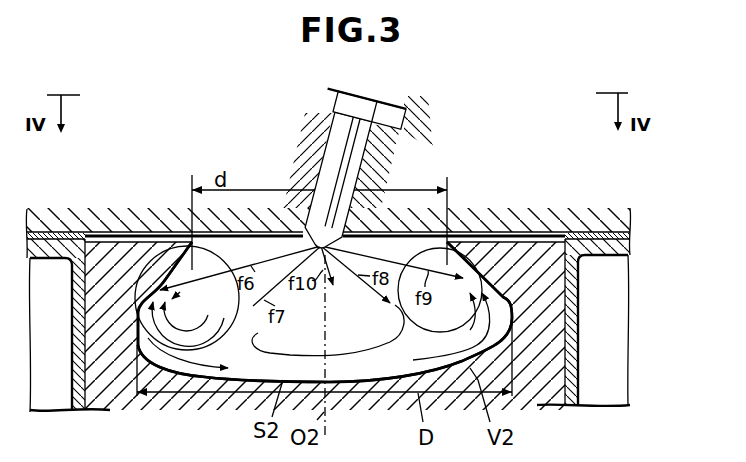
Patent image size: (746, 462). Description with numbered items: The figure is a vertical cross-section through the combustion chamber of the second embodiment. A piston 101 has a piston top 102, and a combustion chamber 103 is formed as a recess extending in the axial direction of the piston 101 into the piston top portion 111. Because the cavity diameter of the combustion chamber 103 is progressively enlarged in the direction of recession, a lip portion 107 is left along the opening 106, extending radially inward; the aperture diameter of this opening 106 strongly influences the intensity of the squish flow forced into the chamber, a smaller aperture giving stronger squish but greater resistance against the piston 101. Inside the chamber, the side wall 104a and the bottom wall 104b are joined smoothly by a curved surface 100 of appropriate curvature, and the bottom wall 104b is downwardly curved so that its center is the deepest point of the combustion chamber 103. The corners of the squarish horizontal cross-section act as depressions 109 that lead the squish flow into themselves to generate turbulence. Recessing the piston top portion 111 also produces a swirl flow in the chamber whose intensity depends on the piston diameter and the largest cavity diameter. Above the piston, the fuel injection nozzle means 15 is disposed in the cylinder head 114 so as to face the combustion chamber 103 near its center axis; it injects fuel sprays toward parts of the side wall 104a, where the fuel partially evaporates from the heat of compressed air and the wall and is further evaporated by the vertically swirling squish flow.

The fuel injection nozzle means 15 is at (340, 140).
The curved surface 100 is at (136, 360).
The piston 101 is at (565, 344).
The piston top 102 is at (568, 238).
The combustion chamber 103 is at (340, 329).
The side wall 104a is at (140, 322).
The bottom wall 104b is at (372, 383).
The opening 106 is at (250, 225).
The lip portion 107 is at (479, 230).
The depressions 109 is at (148, 232).
The piston top portion 111 is at (528, 237).
The cylinder head 114 is at (400, 138).